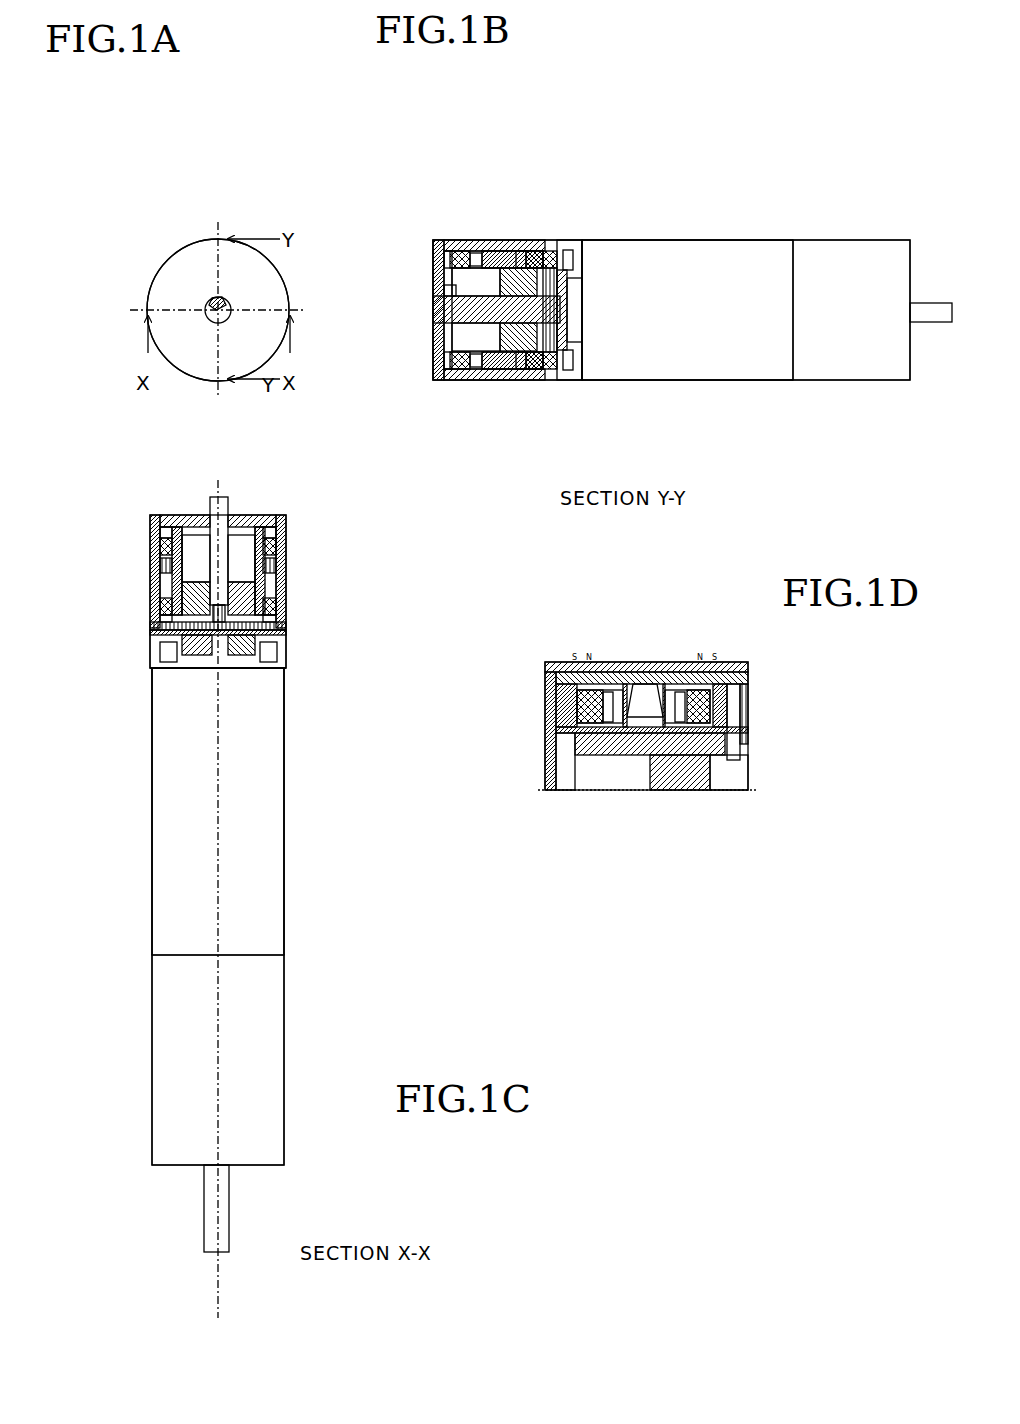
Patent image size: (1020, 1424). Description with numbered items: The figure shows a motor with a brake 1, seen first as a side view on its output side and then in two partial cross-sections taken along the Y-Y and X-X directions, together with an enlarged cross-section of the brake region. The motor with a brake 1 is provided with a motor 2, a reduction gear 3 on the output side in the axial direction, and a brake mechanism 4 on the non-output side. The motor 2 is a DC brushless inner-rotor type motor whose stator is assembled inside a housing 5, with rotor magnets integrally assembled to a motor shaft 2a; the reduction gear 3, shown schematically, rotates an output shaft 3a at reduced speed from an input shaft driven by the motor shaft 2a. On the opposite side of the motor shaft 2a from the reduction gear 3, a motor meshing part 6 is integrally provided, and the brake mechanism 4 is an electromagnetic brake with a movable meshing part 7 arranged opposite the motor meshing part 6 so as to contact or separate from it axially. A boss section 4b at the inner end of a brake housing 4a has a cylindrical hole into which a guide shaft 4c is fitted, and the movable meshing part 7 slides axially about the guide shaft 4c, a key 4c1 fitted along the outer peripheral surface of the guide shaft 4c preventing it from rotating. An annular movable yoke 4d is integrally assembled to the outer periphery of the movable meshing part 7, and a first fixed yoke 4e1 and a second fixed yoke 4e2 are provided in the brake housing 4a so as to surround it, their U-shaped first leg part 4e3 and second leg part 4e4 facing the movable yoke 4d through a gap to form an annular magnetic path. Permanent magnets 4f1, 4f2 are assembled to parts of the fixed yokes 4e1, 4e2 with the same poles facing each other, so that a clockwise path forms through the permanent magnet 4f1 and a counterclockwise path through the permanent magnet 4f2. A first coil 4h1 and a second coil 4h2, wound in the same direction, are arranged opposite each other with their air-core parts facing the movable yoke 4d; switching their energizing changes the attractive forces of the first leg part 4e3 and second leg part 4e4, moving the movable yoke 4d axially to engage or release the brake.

In FIG. 1A, the motor with a brake 1 is at (238, 218).
In FIG. 1B, the motor with a brake 1 is at (647, 213).
In FIG. 1C, the motor with a brake 1 is at (292, 858).
In FIG. 1B, the motor 2 is at (672, 235).
In FIG. 1C, the motor 2 is at (292, 746).
In FIG. 1B, the motor shaft 2a is at (578, 355).
In FIG. 1C, the motor shaft 2a is at (182, 668).
In FIG. 1B, the reduction gear 3 is at (838, 233).
In FIG. 1C, the reduction gear 3 is at (290, 1044).
In FIG. 1B, the output shaft 3a is at (932, 303).
In FIG. 1C, the output shaft 3a is at (230, 1208).
In FIG. 1A, the brake mechanism 4 is at (171, 247).
In FIG. 1B, the brake mechanism 4 is at (434, 160).
In FIG. 1C, the brake mechanism 4 is at (308, 496).
In FIG. 1D, the brake mechanism 4 is at (535, 657).
In FIG. 1A, the brake housing 4a is at (278, 286).
In FIG. 1B, the brake housing 4a is at (436, 362).
In FIG. 1C, the brake housing 4a is at (190, 515).
In FIG. 1D, the brake housing 4a is at (548, 778).
In FIG. 1B, the boss section 4b is at (448, 333).
In FIG. 1C, the boss section 4b is at (200, 517).
In FIG. 1A, the guide shaft 4c is at (207, 307).
In FIG. 1B, the guide shaft 4c is at (445, 311).
In FIG. 1C, the guide shaft 4c is at (224, 517).
In FIG. 1A, the key 4c1 is at (212, 298).
In FIG. 1B, the key 4c1 is at (446, 296).
In FIG. 1B, the movable yoke 4d is at (450, 270).
In FIG. 1C, the movable yoke 4d is at (262, 607).
In FIG. 1D, the movable yoke 4d is at (616, 755).
In FIG. 1B, the first fixed yoke 4e1 is at (448, 240).
In FIG. 1C, the first fixed yoke 4e1 is at (160, 536).
In FIG. 1D, the first fixed yoke 4e1 is at (614, 680).
In FIG. 1B, the second fixed yoke 4e2 is at (526, 250).
In FIG. 1C, the second fixed yoke 4e2 is at (160, 636).
In FIG. 1D, the second fixed yoke 4e2 is at (674, 684).
In FIG. 1B, the first leg part 4e3 is at (444, 244).
In FIG. 1C, the first leg part 4e3 is at (165, 516).
In FIG. 1D, the first leg part 4e3 is at (638, 690).
In FIG. 1B, the second leg part 4e4 is at (520, 250).
In FIG. 1C, the second leg part 4e4 is at (160, 570).
In FIG. 1D, the second leg part 4e4 is at (650, 682).
In FIG. 1B, the permanent magnet 4f1 is at (458, 248).
In FIG. 1C, the permanent magnet 4f1 is at (165, 535).
In FIG. 1D, the permanent magnet 4f1 is at (586, 688).
In FIG. 1B, the permanent magnet 4f2 is at (543, 252).
In FIG. 1C, the permanent magnet 4f2 is at (162, 612).
In FIG. 1D, the permanent magnet 4f2 is at (706, 688).
In FIG. 1B, the first coil 4h1 is at (474, 252).
In FIG. 1C, the first coil 4h1 is at (162, 525).
In FIG. 1D, the first coil 4h1 is at (560, 690).
In FIG. 1C, the second coil 4h2 is at (162, 626).
In FIG. 1D, the second coil 4h2 is at (735, 690).
In FIG. 1B, the housing 5 is at (732, 240).
In FIG. 1C, the housing 5 is at (286, 806).
In FIG. 1B, the motor meshing part 6 is at (552, 340).
In FIG. 1C, the motor meshing part 6 is at (276, 664).
In FIG. 1B, the movable meshing part 7 is at (560, 300).
In FIG. 1C, the movable meshing part 7 is at (162, 598).
In FIG. 1D, the movable meshing part 7 is at (690, 770).